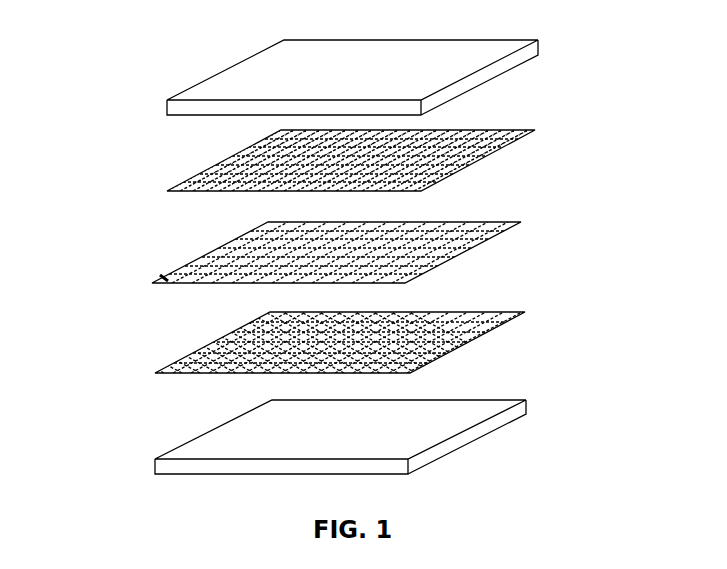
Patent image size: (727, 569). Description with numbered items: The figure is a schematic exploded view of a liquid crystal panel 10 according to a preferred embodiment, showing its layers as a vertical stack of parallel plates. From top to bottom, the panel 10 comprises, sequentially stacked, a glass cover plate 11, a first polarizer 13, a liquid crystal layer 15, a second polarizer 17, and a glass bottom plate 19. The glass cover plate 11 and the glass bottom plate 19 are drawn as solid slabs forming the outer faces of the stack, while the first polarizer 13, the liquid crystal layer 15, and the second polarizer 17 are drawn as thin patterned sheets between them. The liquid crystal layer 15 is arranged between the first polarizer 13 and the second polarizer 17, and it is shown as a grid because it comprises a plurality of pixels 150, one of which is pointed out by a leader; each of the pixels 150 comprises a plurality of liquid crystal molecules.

The liquid crystal panel 10 is at (125, 44).
The glass cover plate 11 is at (540, 46).
The first polarizer 13 is at (536, 131).
The liquid crystal layer 15 is at (523, 224).
The pixel 150 is at (168, 278).
The second polarizer 17 is at (527, 313).
The glass bottom plate 19 is at (528, 404).